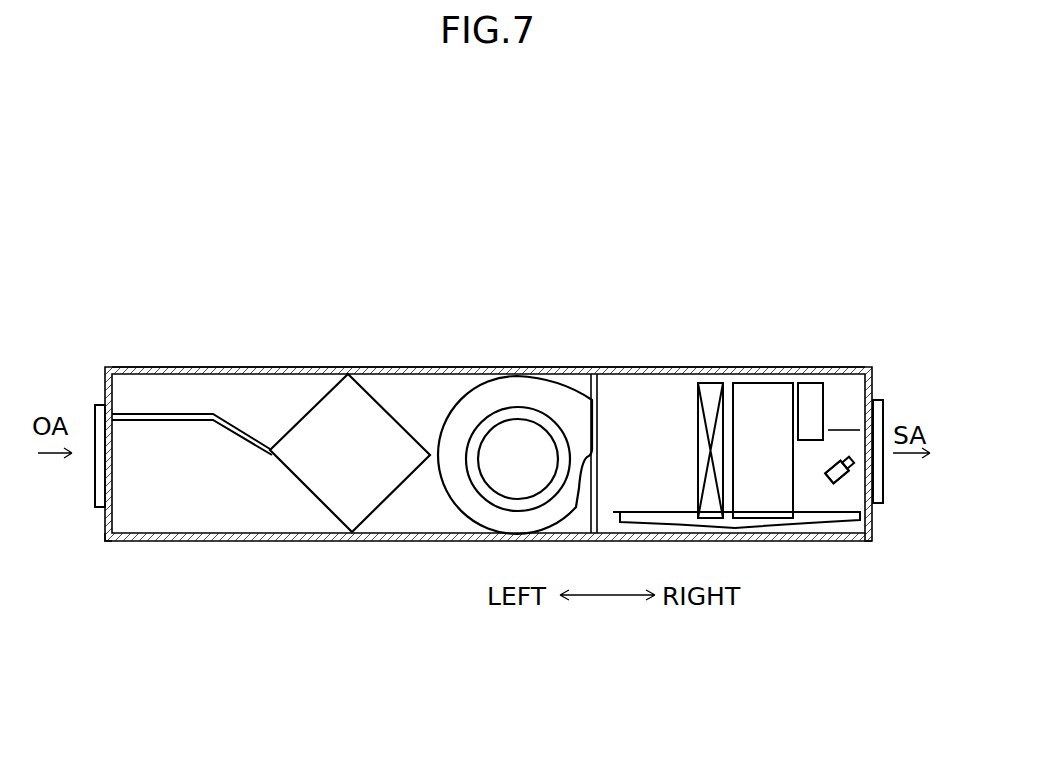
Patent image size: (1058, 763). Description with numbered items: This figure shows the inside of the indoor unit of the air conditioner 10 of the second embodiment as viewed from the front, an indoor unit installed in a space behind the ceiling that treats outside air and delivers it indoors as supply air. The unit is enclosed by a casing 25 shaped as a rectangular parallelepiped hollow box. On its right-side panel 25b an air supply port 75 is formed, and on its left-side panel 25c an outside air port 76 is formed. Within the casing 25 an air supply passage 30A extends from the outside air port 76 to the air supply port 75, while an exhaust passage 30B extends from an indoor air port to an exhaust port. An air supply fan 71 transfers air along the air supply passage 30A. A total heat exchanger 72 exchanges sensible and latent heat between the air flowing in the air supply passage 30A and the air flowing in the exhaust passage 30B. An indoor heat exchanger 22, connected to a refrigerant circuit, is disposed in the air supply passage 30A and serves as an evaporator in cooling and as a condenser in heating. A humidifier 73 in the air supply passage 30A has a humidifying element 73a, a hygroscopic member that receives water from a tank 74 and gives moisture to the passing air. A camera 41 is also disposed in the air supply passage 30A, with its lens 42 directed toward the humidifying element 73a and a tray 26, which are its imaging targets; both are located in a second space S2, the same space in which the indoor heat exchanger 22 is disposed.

The air conditioner 10 is at (620, 290).
The indoor heat exchanger 22 is at (698, 413).
The casing 25 is at (528, 367).
The right-side panel 25b is at (873, 517).
The left-side panel 25c is at (105, 522).
The tray 26 is at (650, 512).
The air supply passage 30A is at (618, 398).
The exhaust passage 30B is at (248, 398).
The camera 41 is at (845, 482).
The lens 42 is at (834, 477).
The air supply fan 71 is at (466, 398).
The total heat exchanger 72 is at (379, 401).
The humidifier 73 is at (762, 383).
The humidifying element 73a is at (738, 391).
The tank 74 is at (812, 382).
The air supply port 75 is at (885, 480).
The outside air port 76 is at (95, 485).
The second space S2 is at (844, 418).